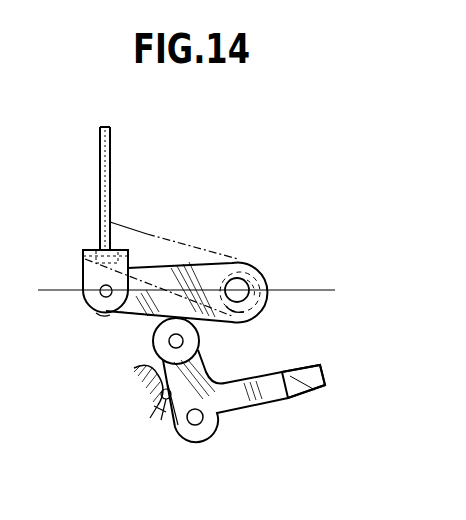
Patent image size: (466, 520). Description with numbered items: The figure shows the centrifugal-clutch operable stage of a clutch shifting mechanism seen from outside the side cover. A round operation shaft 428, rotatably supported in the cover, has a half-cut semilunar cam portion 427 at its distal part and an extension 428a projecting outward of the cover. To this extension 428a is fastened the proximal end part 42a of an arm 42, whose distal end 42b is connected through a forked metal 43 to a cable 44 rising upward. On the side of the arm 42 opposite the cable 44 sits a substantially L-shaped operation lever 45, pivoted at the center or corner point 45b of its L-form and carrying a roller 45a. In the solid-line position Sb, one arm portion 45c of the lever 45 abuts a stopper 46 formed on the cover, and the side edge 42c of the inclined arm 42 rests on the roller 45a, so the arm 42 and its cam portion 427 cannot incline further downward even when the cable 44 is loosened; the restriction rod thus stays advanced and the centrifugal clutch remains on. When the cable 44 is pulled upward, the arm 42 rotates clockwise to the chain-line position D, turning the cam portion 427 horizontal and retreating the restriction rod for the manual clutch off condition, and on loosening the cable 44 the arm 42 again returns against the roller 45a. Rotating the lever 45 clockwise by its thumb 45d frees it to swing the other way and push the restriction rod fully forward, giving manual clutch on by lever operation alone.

The arm 42 is at (194, 258).
The proximal end part 42a is at (253, 270).
The distal end 42b is at (100, 314).
The side edge 42c is at (134, 318).
The semilunar cam portion 427 is at (250, 276).
The operation shaft 428 is at (262, 290).
The extension 428a is at (270, 301).
The forked metal 43 is at (83, 266).
The cable 44 is at (110, 188).
The operation lever 45 is at (247, 407).
The roller 45a is at (200, 342).
The pivot pin 45b is at (195, 426).
The arm portion 45c is at (182, 397).
The thumb 45d is at (310, 382).
The stopper 46 is at (162, 398).
The position D is at (148, 215).
The position Sb is at (268, 319).